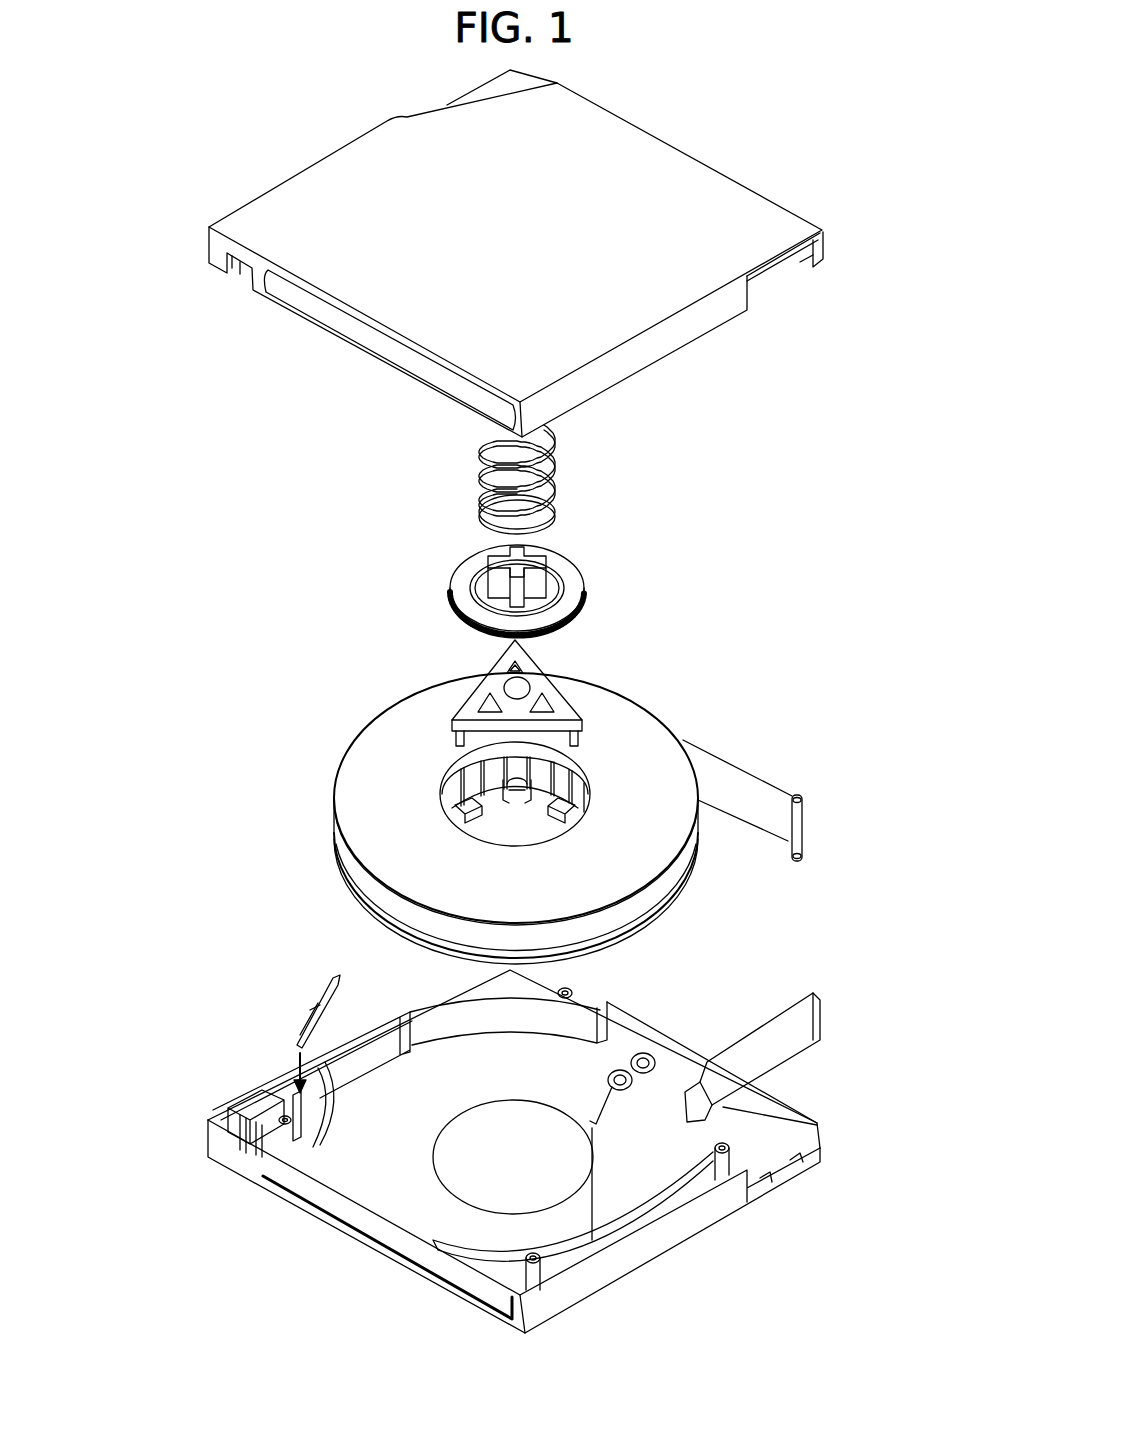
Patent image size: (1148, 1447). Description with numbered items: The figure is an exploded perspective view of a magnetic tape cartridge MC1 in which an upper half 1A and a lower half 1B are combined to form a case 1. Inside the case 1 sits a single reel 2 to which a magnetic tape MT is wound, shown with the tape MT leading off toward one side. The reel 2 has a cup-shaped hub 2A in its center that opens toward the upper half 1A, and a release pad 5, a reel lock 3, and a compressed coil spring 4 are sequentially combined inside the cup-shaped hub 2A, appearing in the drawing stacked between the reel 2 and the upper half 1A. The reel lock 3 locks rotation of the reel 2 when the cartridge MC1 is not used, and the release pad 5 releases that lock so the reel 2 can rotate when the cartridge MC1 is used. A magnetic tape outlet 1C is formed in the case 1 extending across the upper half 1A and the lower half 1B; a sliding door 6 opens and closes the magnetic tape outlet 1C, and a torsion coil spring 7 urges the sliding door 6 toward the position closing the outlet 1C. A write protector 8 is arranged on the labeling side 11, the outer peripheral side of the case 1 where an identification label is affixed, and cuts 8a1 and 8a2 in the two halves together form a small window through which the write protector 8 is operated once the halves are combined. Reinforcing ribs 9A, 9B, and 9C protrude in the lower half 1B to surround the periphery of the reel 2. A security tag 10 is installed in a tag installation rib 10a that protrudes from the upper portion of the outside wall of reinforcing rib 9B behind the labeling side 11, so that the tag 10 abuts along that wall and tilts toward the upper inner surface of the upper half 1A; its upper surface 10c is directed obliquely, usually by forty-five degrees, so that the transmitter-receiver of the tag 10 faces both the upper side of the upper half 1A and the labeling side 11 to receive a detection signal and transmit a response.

The magnetic tape cartridge MC1 is at (670, 132).
The case 1 is at (140, 550).
The upper half 1A is at (484, 338).
The lower half 1B is at (487, 984).
The magnetic tape outlet 1C is at (758, 300).
The reel 2 is at (554, 811).
The cup-shaped hub 2A is at (463, 786).
The reel lock 3 is at (570, 572).
The compressed coil spring 4 is at (557, 455).
The release pad 5 is at (548, 697).
The sliding door 6 is at (790, 1043).
The torsion coil spring 7 is at (640, 1060).
The write protector 8 is at (228, 1113).
The cut 8a1 is at (200, 277).
The cut 8a2 is at (232, 1145).
The reinforcing rib 9A is at (503, 1250).
The reinforcing rib 9B is at (315, 1112).
The reinforcing rib 9C is at (512, 1022).
The security tag 10 is at (322, 984).
The tag installation rib 10a is at (290, 1080).
The upper surface of the security tag 10c is at (259, 1022).
The labeling side 11 is at (400, 360).
The magnetic tape MT is at (745, 800).